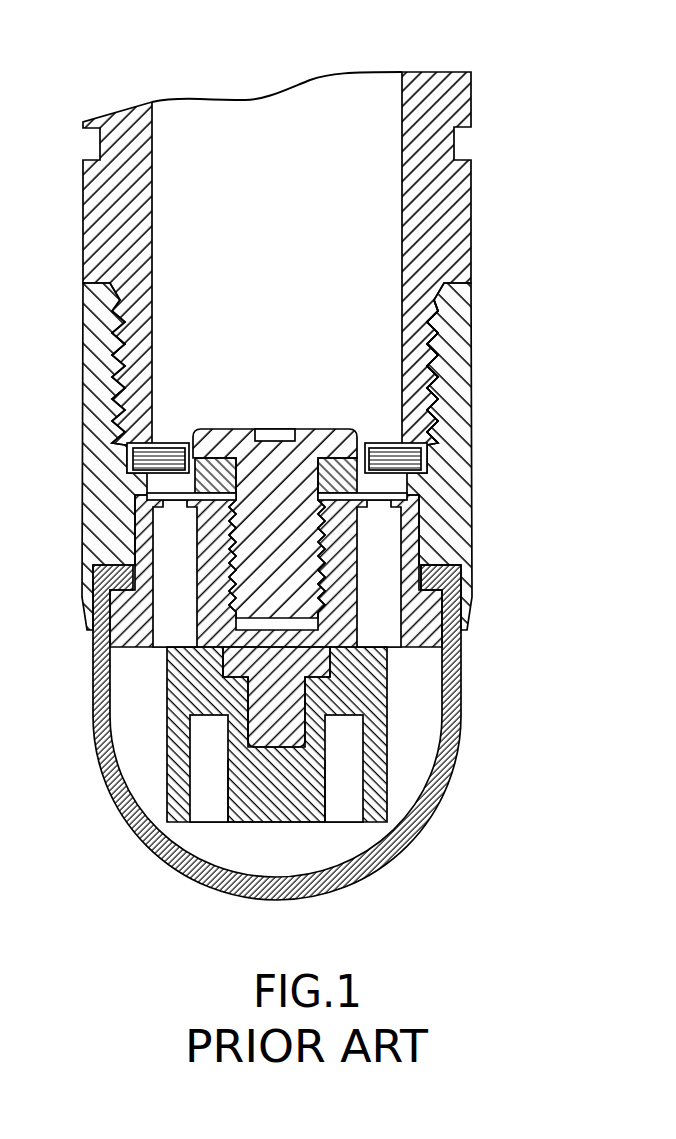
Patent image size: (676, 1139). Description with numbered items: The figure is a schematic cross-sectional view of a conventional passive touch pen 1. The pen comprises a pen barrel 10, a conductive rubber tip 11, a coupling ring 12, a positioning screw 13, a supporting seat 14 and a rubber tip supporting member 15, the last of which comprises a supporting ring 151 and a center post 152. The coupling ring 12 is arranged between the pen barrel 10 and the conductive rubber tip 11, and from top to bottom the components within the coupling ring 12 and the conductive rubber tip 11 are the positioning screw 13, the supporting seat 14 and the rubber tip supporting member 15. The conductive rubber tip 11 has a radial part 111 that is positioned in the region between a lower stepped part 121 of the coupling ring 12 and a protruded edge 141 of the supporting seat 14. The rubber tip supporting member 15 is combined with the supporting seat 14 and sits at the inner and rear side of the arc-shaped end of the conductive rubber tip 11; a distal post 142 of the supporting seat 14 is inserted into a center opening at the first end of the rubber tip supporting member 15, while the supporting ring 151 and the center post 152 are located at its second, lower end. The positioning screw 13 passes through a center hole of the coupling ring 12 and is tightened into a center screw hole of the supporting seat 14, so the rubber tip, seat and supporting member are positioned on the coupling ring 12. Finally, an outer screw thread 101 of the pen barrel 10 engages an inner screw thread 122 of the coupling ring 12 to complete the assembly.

The passive touch pen 1 is at (159, 38).
The pen barrel 10 is at (450, 209).
The outer screw thread 101 is at (445, 302).
The conductive rubber tip 11 is at (399, 852).
The radial part 111 is at (445, 562).
The coupling ring 12 is at (457, 371).
The lower stepped part 121 is at (432, 442).
The inner screw thread 122 is at (428, 330).
The positioning screw 13 is at (322, 426).
The supporting seat 14 is at (342, 621).
The protruded edge 141 is at (420, 618).
The distal post 142 is at (275, 708).
The rubber tip supporting member 15 is at (216, 801).
The supporting ring 151 is at (178, 787).
The center post 152 is at (278, 800).